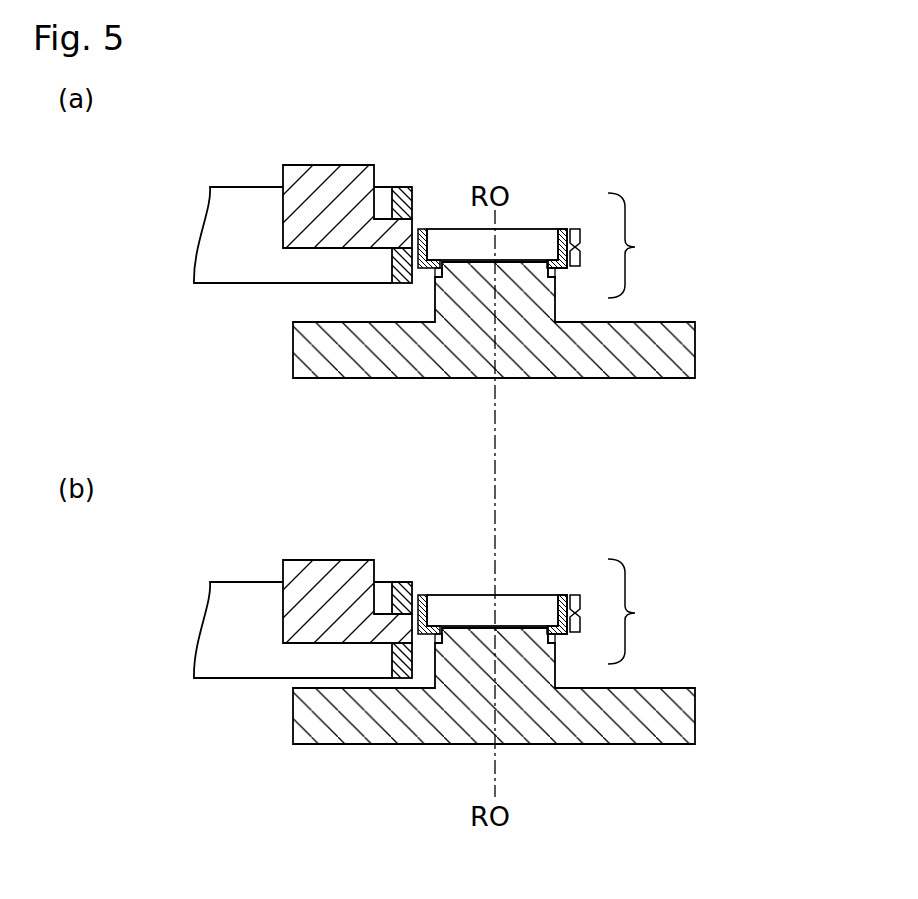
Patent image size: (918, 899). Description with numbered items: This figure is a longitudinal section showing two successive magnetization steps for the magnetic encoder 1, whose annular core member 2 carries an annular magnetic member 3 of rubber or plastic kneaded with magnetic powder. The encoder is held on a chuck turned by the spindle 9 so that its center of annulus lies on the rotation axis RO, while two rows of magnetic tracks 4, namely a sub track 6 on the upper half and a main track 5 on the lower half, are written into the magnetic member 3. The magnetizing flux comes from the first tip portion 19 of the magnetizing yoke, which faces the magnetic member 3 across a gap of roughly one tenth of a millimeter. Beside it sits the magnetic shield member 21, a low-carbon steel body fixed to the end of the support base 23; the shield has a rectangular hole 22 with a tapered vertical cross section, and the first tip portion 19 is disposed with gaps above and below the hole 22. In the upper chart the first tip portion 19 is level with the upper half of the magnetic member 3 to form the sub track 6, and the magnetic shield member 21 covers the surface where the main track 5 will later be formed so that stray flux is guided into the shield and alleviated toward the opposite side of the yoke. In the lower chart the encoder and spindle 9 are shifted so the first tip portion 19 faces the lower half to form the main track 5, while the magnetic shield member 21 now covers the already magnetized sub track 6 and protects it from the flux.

The magnetic encoder 1 is at (522, 233).
The core member 2 is at (562, 230).
The magnetic member 3 is at (567, 231).
The magnetic track 4 is at (633, 428).
The main track 5 is at (582, 256).
The sub track 6 is at (582, 238).
The spindle 9 is at (678, 348).
The first tip portion 19 is at (328, 172).
The magnetic shield member 21 is at (404, 187).
The rectangular hole 22 is at (400, 258).
The support base 23 is at (241, 195).